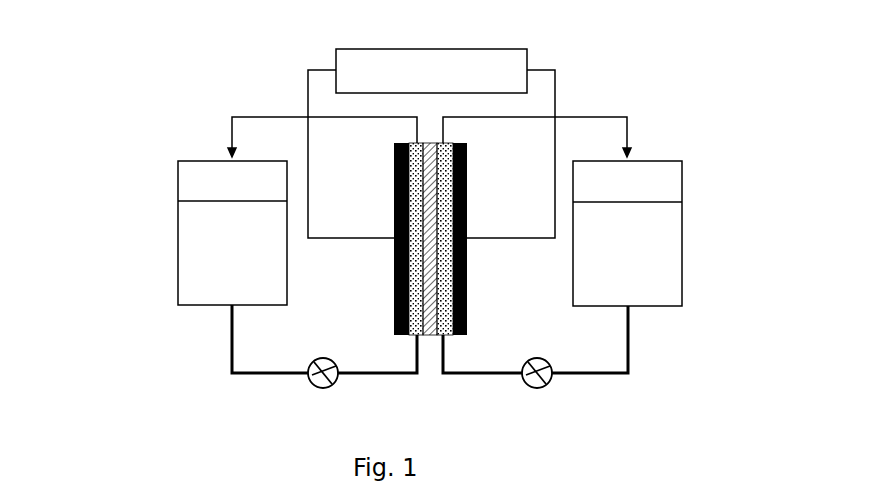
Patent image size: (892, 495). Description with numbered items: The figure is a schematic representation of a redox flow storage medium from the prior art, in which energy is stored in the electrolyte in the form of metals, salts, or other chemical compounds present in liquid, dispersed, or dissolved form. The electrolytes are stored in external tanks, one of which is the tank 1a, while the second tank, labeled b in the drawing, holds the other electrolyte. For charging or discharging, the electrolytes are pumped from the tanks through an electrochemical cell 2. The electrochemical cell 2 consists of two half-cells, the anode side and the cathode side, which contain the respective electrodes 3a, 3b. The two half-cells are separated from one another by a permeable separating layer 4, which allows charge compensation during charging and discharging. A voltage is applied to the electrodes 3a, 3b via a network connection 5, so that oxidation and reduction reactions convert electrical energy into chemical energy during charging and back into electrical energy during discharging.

The network connection 5 is at (495, 60).
The electrochemical cell 2 is at (452, 277).
The electrode 3a is at (455, 337).
The electrode 3b is at (405, 337).
The permeable separating layer 4 is at (430, 337).
The external tank 1a is at (682, 257).
The negative electrolyte tank b is at (178, 260).